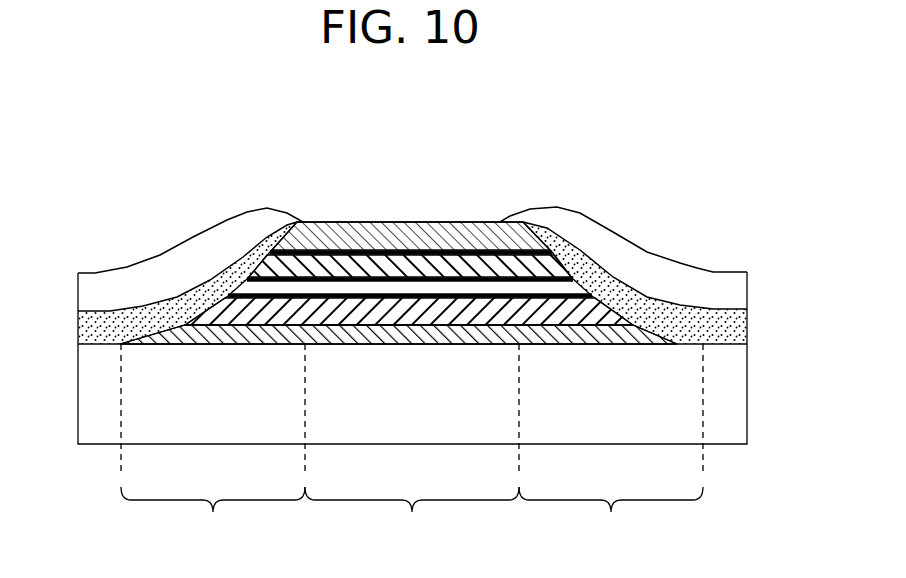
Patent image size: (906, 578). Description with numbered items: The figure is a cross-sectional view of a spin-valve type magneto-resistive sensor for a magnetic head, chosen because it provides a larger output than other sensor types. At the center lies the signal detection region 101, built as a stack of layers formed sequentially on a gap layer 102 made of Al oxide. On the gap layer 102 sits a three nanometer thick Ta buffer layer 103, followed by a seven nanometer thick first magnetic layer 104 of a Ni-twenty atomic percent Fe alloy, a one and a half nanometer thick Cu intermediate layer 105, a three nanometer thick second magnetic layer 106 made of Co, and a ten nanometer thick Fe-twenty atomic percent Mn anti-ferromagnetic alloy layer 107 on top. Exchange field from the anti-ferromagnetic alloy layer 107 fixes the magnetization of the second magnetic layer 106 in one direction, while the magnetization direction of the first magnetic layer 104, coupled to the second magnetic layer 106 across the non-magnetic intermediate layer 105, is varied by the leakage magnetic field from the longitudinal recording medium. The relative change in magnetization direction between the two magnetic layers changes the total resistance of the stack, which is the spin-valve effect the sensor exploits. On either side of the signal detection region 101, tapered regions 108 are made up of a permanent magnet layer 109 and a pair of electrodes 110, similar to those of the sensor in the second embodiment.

The signal detection region 101 is at (412, 452).
The gap layer 102 is at (725, 393).
The Ta buffer layer 103 is at (398, 241).
The first magnetic layer 104 is at (409, 243).
The Cu intermediate layer 105 is at (410, 198).
The second magnetic layer 106 is at (410, 211).
The anti-ferromagnetic alloy layer 107 is at (397, 193).
The tapered regions 108 is at (412, 452).
The permanent magnet layer 109 is at (416, 276).
The electrodes 110 is at (412, 217).